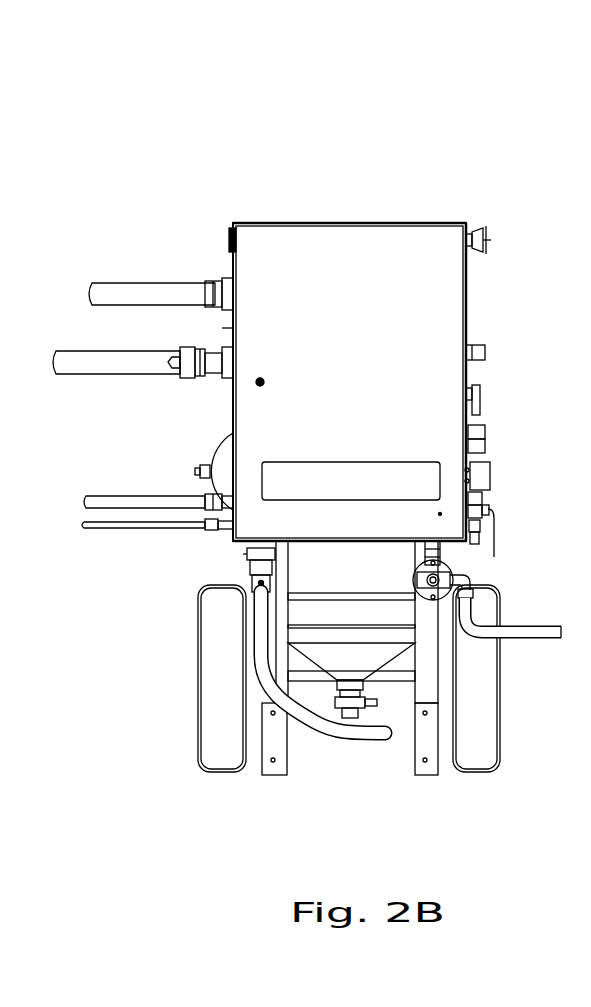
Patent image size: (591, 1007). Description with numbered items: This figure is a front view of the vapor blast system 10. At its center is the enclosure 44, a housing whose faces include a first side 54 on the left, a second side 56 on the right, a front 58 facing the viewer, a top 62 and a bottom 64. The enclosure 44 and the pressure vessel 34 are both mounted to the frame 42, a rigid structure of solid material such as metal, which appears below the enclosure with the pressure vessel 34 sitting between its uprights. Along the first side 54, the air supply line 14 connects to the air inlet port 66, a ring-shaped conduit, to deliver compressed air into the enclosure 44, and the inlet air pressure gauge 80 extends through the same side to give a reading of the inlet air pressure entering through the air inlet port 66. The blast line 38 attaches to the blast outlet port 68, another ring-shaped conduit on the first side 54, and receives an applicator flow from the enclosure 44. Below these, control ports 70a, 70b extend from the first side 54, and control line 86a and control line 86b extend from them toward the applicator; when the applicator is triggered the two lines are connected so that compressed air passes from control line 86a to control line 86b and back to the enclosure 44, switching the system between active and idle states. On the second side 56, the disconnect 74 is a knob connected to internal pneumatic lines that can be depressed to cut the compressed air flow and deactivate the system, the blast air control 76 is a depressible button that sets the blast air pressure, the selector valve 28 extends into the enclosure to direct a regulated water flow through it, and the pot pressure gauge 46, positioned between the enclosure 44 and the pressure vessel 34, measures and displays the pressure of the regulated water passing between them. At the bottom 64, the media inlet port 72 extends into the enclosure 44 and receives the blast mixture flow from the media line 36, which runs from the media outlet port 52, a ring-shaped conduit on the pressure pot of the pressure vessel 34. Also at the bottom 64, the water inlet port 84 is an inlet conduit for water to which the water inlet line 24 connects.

The vapor blast system 10 is at (533, 160).
The air supply line 14 is at (117, 293).
The water inlet line 24 is at (524, 640).
The selector valve 28 is at (480, 400).
The pressure vessel 34 is at (376, 656).
The media line 36 is at (336, 742).
The blast line 38 is at (92, 374).
The frame 42 is at (282, 764).
The enclosure 44 is at (420, 215).
The pot pressure gauge 46 is at (490, 474).
The media outlet port 52 is at (352, 712).
The first side 54 is at (232, 329).
The second side 56 is at (466, 297).
The front 58 is at (339, 348).
The top 62 is at (295, 222).
The bottom 64 is at (302, 543).
The air inlet port 66 is at (228, 283).
The blast outlet port 68 is at (222, 373).
The control port 70a is at (205, 498).
The control port 70b is at (212, 529).
The media inlet port 72 is at (245, 571).
The disconnect 74 is at (493, 240).
The blast air control 76 is at (485, 352).
The inlet air pressure gauge 80 is at (222, 238).
The water inlet port 84 is at (423, 545).
The control line 86a is at (85, 499).
The control line 86b is at (82, 525).